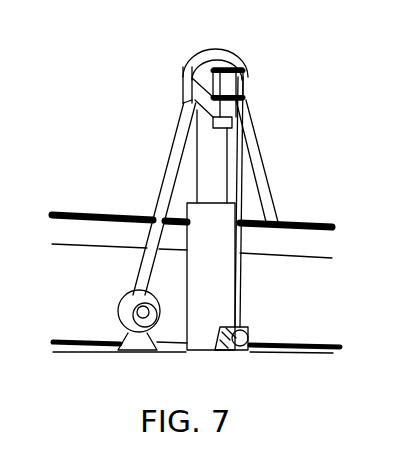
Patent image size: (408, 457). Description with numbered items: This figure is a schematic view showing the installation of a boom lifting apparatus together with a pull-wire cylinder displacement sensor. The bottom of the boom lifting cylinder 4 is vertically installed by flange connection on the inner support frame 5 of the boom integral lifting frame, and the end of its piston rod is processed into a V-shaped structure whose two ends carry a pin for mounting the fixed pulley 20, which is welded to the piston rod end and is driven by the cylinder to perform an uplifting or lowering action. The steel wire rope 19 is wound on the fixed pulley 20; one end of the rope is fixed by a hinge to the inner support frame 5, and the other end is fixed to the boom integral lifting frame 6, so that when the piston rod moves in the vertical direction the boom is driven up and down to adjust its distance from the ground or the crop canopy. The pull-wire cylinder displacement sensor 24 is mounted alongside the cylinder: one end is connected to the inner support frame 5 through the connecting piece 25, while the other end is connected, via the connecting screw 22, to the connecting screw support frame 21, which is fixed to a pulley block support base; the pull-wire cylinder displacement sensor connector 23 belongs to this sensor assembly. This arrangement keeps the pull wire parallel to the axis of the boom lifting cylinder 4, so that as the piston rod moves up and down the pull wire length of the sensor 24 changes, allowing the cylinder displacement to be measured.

The boom lifting cylinder 4 is at (222, 262).
The inner support frame of boom integral lifting frame 5 is at (107, 347).
The boom integral lifting frame 6 is at (117, 227).
The steel wire rope 19 is at (165, 135).
The fixed pulley 20 is at (181, 68).
The connecting screw support frame 21 is at (230, 50).
The connecting screw 22 is at (244, 68).
The pull-wire cylinder displacement sensor connector 23 is at (245, 78).
The pull-wire cylinder displacement sensor 24 is at (246, 334).
The connecting piece between pull-wire cylinder displacement sensor and inner suppor 25 is at (232, 353).